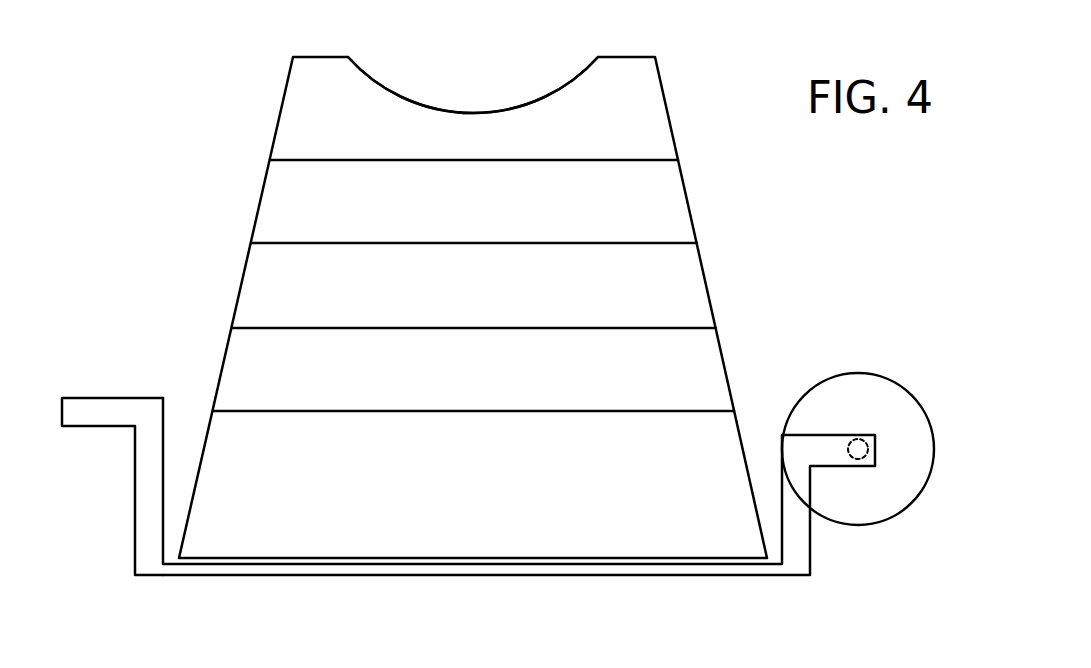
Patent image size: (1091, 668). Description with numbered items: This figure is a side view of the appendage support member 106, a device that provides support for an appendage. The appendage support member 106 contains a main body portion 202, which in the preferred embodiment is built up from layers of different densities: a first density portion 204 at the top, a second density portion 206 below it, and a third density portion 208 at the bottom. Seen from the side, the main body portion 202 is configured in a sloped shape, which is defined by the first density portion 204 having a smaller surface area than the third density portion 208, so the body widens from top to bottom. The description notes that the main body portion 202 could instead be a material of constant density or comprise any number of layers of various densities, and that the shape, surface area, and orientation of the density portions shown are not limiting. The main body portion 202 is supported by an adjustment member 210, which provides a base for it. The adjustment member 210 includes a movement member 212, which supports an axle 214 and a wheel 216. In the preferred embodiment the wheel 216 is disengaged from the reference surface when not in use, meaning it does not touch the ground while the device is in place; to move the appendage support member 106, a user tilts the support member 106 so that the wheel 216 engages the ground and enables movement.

The appendage support member 106 is at (146, 43).
The main body portion 202 is at (822, 259).
The first density portion 204 is at (280, 108).
The second density portion 206 is at (263, 188).
The third density portion 208 is at (202, 460).
The adjustment member 210 is at (809, 600).
The movement member 212 is at (150, 576).
The axle 214 is at (848, 448).
The wheel 216 is at (907, 390).